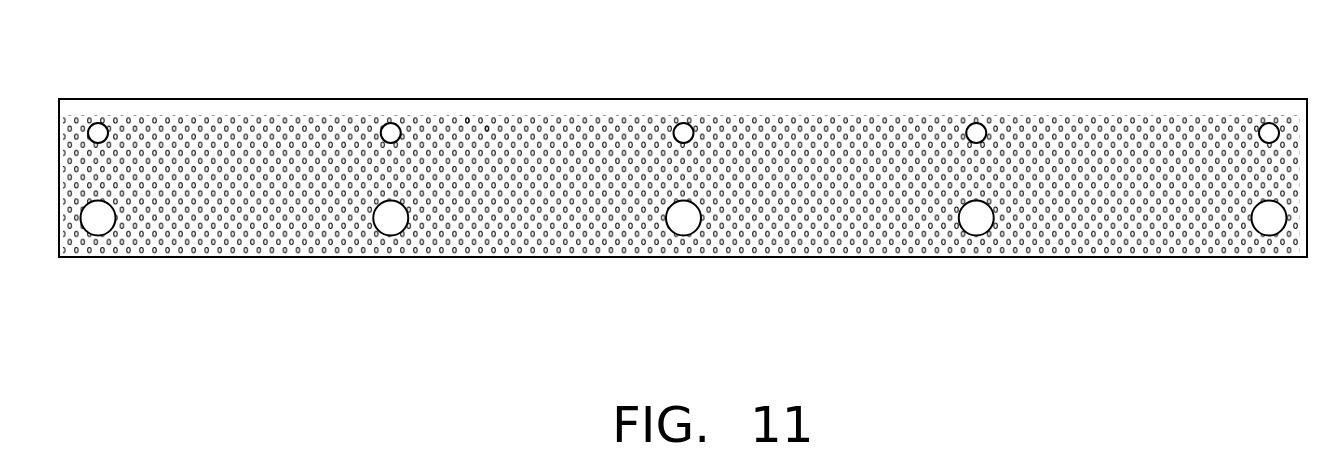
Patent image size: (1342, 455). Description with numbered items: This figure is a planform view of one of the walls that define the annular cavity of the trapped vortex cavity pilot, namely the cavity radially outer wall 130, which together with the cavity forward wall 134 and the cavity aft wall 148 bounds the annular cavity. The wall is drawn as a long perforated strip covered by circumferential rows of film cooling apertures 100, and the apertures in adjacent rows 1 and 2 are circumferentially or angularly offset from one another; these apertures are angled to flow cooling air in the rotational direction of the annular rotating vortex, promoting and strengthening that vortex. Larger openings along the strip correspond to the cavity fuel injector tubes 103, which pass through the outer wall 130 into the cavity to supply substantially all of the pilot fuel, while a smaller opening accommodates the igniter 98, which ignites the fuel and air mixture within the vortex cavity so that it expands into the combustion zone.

The film cooling apertures 100 is at (282, 112).
The cavity forward wall 134 is at (783, 98).
The cavity aft wall 148 is at (541, 260).
The cavity radially outer wall 130 is at (765, 243).
The row 1 is at (468, 122).
The row 2 is at (487, 129).
The igniter 98 is at (975, 133).
The cavity fuel injector tubes 103 is at (976, 220).